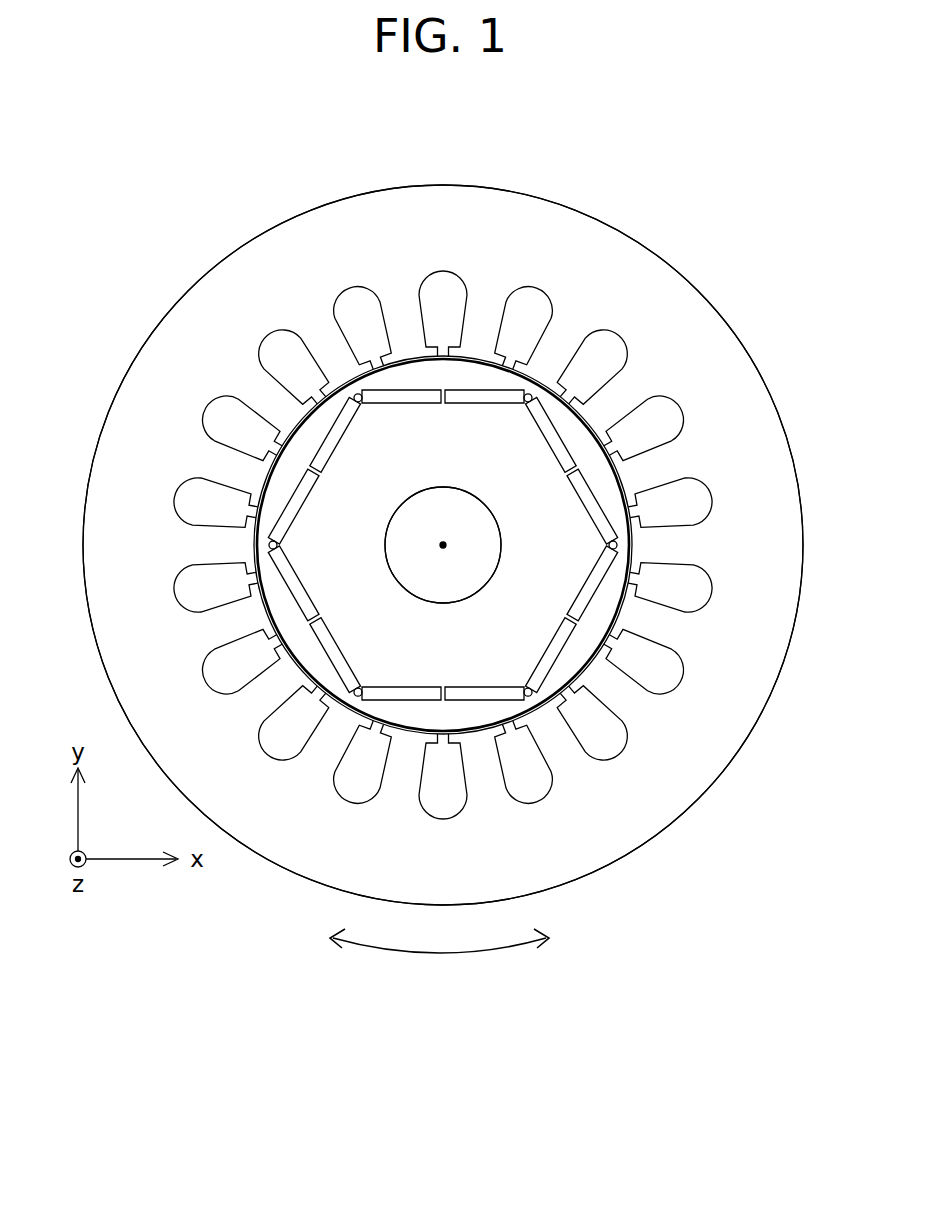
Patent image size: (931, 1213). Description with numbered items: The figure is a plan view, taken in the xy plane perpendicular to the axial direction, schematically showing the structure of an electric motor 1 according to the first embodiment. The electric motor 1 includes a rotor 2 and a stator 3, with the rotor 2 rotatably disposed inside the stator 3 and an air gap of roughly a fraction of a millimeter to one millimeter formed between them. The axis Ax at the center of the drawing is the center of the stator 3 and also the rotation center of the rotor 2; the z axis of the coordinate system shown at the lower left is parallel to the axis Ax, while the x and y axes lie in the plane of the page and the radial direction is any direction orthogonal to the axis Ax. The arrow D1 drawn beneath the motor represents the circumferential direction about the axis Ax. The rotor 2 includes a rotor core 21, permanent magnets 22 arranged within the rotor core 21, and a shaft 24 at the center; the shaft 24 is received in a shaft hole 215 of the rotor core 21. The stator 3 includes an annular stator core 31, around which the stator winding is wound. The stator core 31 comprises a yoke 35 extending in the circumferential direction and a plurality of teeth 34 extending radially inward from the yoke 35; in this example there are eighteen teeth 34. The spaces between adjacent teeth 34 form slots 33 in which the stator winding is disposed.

The electric motor 1 is at (156, 240).
The rotor 2 is at (443, 352).
The stator 3 is at (443, 184).
The rotor core 21 is at (572, 430).
The permanent magnet 22 is at (415, 403).
The shaft 24 is at (478, 551).
The shaft hole 215 is at (443, 488).
The stator core 31 is at (160, 362).
The slot 33 is at (443, 283).
The teeth 34 is at (405, 313).
The yoke 35 is at (695, 327).
The axis Ax is at (443, 549).
The arrow indicating circumferential direction D1 is at (437, 956).